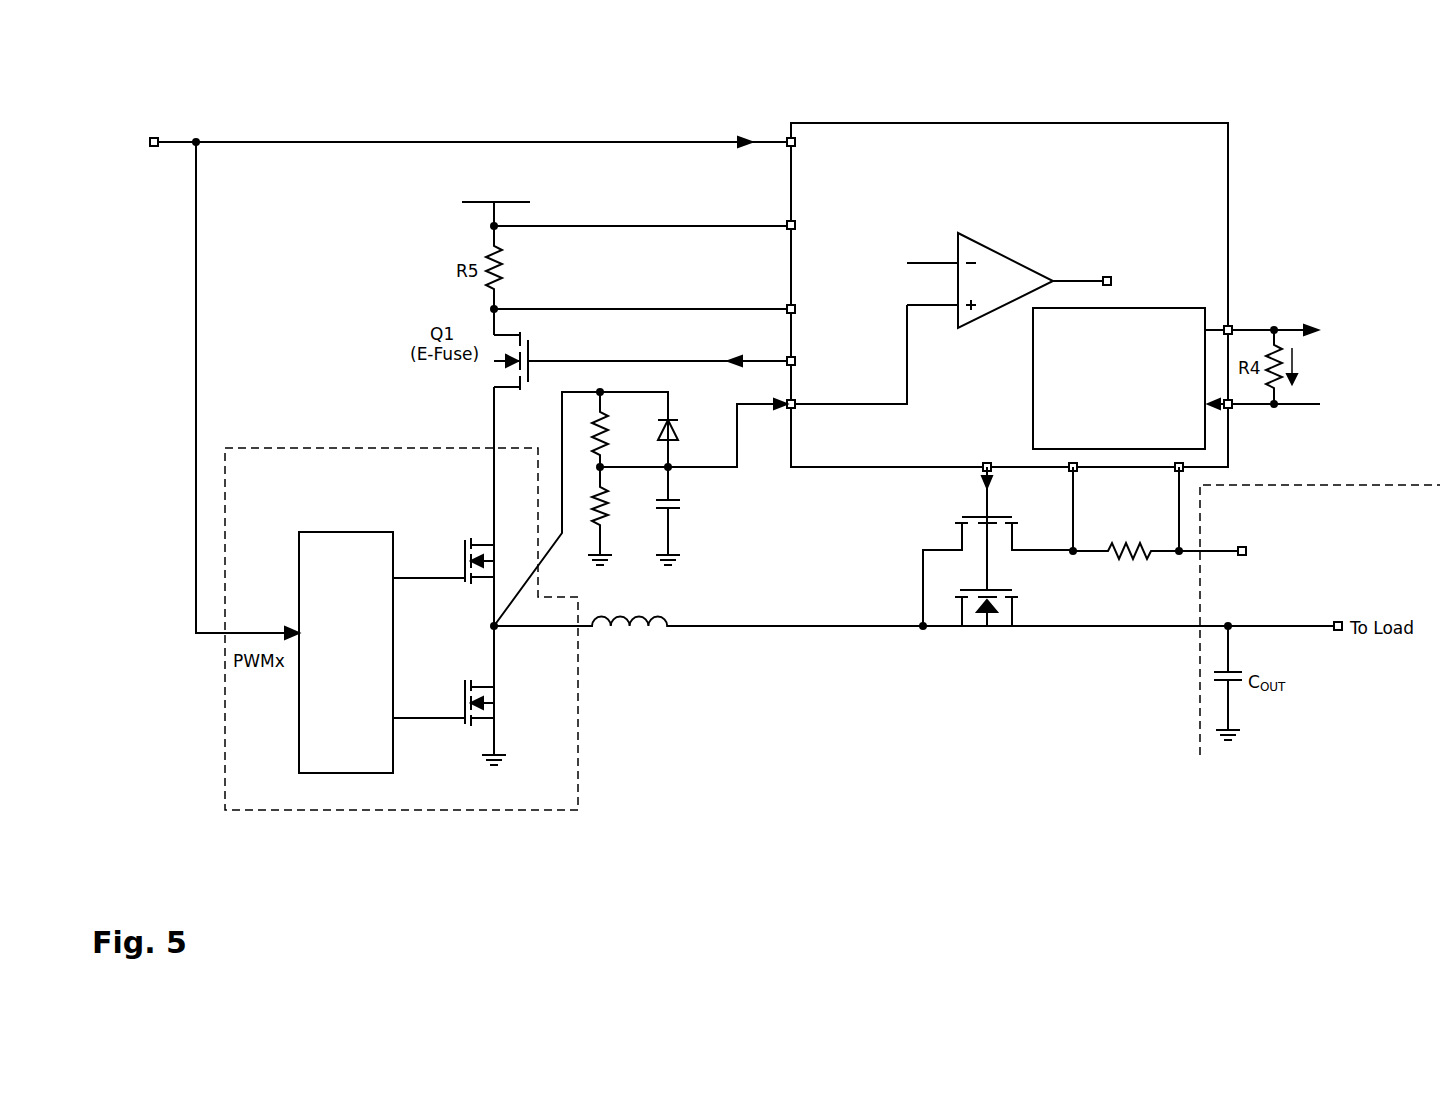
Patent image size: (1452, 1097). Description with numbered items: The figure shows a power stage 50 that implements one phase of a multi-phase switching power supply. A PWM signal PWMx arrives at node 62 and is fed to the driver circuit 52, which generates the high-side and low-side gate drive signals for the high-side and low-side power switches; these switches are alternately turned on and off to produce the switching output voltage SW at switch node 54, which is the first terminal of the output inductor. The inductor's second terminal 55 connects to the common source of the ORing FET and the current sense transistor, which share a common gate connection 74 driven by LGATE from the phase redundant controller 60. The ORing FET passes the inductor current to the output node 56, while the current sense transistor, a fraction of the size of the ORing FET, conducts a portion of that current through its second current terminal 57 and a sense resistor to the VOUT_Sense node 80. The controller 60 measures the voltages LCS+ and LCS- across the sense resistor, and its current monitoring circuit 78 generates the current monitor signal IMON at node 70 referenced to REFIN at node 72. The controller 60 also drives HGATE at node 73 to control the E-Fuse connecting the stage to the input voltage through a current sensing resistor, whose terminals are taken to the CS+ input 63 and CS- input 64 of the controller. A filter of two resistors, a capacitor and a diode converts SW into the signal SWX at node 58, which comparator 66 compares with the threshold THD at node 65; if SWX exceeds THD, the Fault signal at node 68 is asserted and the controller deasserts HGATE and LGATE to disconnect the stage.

The power stage 50 is at (1288, 104).
The driver circuit 52 is at (346, 652).
The switch node 54 is at (554, 628).
The second terminal of the output inductor 55 is at (805, 624).
The output node 56 is at (478, 210).
The second current terminal of the current sense transistor 57 is at (1086, 549).
The SWX node 58 is at (722, 468).
The phase redundant controller 60 is at (1228, 148).
The PWMx node 62 is at (662, 141).
The CS+ current sense input 63 is at (702, 225).
The CS- current sense input 64 is at (708, 308).
The voltage threshold THD node 65 is at (932, 262).
The comparator 66 is at (1004, 252).
The Fault node 68 is at (1079, 280).
The IMON node 70 is at (1284, 328).
The REFIN node 72 is at (1292, 406).
The HGATE node 73 is at (676, 360).
The common gate connection 74 is at (987, 572).
The current monitoring circuit 78 is at (1033, 372).
The VOUT_Sense node 80 is at (1218, 549).